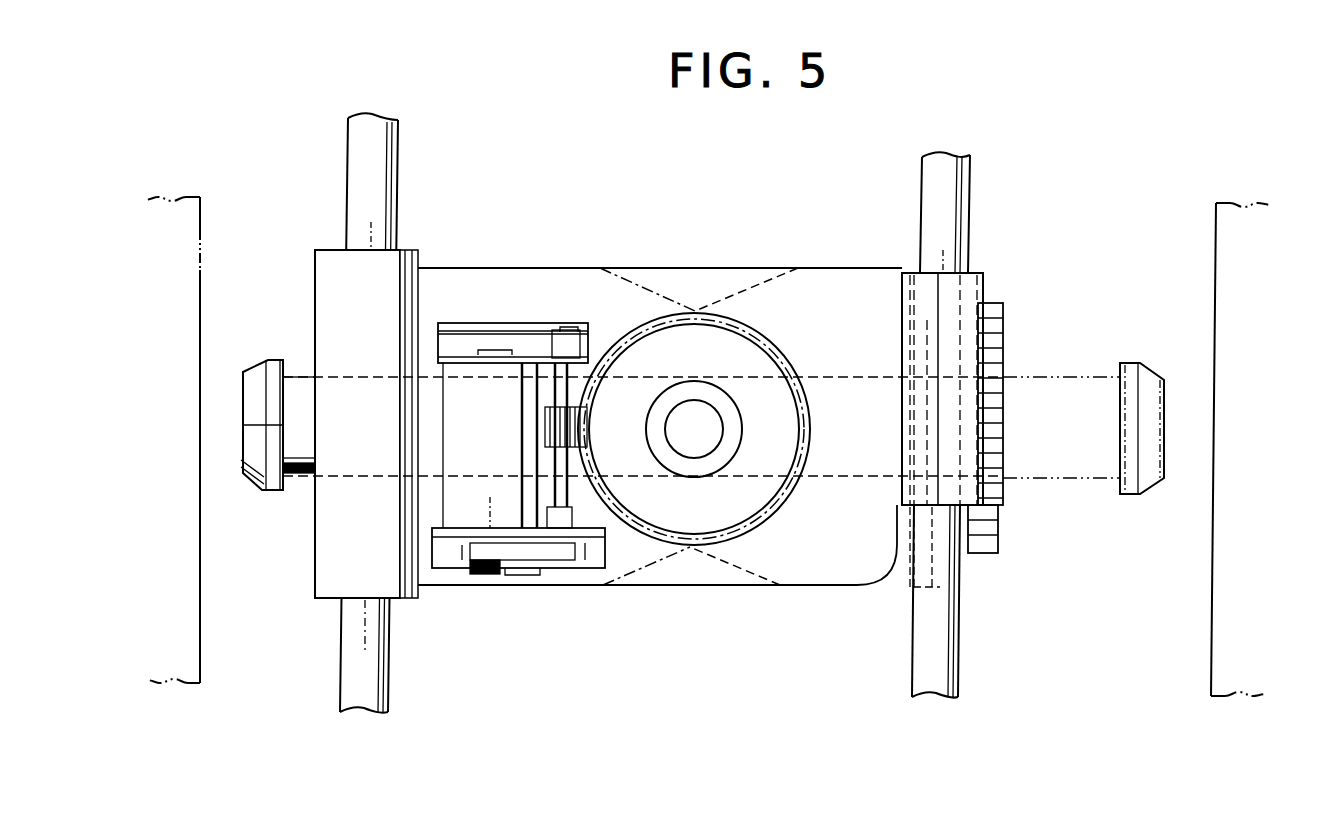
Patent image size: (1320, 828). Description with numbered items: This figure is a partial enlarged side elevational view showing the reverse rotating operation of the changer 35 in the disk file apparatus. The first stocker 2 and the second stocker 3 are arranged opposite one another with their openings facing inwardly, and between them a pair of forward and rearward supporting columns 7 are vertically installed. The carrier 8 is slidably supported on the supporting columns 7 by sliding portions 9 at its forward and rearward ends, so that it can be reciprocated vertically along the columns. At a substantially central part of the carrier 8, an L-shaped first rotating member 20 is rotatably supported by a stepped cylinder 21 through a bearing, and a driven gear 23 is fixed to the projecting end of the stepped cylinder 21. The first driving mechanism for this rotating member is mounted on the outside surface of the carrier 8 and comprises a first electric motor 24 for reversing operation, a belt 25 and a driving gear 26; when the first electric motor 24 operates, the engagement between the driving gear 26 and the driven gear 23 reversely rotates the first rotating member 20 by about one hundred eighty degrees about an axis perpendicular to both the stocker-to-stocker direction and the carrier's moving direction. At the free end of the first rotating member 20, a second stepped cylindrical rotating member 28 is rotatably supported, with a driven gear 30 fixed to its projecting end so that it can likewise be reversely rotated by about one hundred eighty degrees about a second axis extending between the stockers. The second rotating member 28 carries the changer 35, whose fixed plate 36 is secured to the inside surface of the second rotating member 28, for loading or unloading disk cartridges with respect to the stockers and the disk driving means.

The first stocker 2 is at (200, 268).
The second stocker 3 is at (1214, 282).
The supporting columns 7 is at (348, 672).
The carrier 8 is at (518, 275).
The sliding portions 9 is at (328, 587).
The first rotating member 20 is at (760, 287).
The stepped cylinder 21 is at (733, 433).
The driven gear 23 is at (758, 530).
The first electric motor 24 is at (465, 515).
The belt 25 is at (520, 573).
The driving gear 26 is at (545, 430).
The second rotating member 28 is at (963, 345).
The driven gear 30 is at (1000, 525).
The changer 35 is at (306, 374).
The fixed plate 36 is at (893, 570).